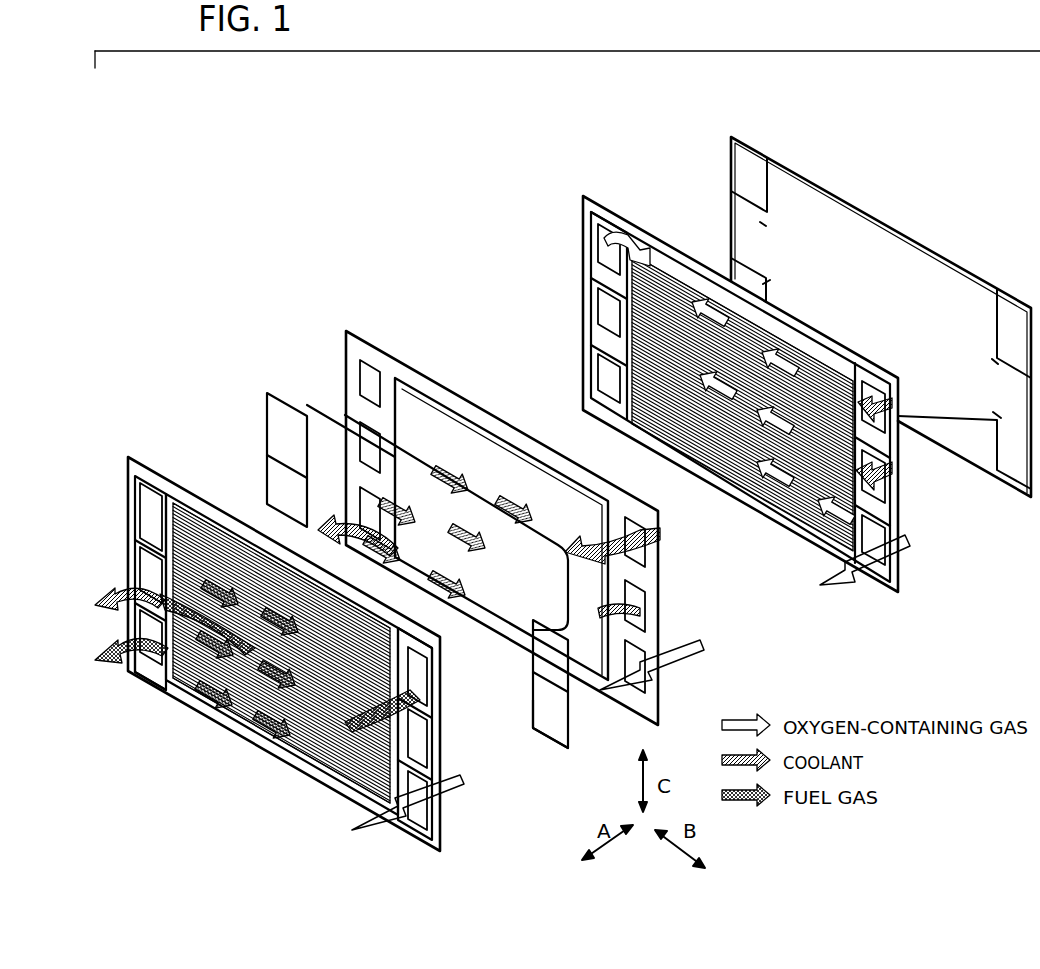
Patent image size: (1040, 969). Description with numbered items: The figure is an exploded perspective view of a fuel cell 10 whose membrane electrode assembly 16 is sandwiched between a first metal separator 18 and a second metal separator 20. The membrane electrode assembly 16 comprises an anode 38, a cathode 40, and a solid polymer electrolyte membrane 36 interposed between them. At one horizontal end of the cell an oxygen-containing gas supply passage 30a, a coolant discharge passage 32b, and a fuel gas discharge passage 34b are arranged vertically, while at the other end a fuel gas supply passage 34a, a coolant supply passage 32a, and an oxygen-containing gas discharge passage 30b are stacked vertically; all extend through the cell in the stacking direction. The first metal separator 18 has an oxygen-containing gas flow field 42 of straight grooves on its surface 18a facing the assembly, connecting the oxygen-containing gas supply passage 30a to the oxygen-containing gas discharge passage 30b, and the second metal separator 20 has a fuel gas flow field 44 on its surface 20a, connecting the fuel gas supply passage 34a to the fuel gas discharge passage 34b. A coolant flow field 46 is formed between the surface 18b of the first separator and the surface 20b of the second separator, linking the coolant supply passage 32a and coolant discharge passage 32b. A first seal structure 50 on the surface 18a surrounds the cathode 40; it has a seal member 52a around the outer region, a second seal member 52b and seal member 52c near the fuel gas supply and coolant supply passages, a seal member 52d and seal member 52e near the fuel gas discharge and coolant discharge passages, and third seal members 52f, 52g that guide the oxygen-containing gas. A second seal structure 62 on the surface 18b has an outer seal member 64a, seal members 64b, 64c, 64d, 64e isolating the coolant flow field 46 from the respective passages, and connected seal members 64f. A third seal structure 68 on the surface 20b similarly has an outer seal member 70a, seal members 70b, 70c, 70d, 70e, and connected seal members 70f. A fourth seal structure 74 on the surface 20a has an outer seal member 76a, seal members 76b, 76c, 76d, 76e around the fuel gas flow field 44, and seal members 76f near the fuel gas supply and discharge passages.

The fuel cell 10 is at (452, 236).
The membrane electrode assembly 16 is at (346, 331).
The first metal separator 18 is at (583, 196).
The surface of the first metal separator 18a is at (724, 475).
The surface of the first metal separator 18b is at (772, 495).
The second metal separator 20 is at (128, 457).
The surface of the second metal separator 20a is at (328, 772).
The surface of the second metal separator 20b is at (290, 758).
The oxygen-containing gas supply passage 30a is at (150, 530).
The oxygen-containing gas discharge passage 30b is at (428, 812).
The coolant supply passage 32a is at (430, 745).
The coolant discharge passage 32b is at (150, 580).
The fuel gas supply passage 34a is at (428, 680).
The fuel gas discharge passage 34b is at (150, 640).
The solid polymer electrolyte membrane 36 is at (630, 700).
The anode 38 is at (442, 402).
The cathode 40 is at (543, 470).
The oxygen-containing gas flow field 42 is at (815, 355).
The fuel gas flow field 44 is at (360, 625).
The coolant flow field 46 is at (192, 512).
The first seal structure 50 is at (685, 262).
The first seal member 52a is at (638, 412).
The second seal member 52b is at (870, 392).
The seal member 52c is at (888, 482).
The seal member 52d is at (605, 378).
The seal member 52e is at (605, 322).
The third seal member 52f is at (612, 235).
The third seal member 52g is at (832, 548).
The second seal structure 62 is at (731, 137).
The seal member 64a is at (905, 240).
The seal member 64b is at (769, 206).
The seal member 64c is at (995, 440).
The seal member 64d is at (995, 324).
The seal member 64e is at (764, 275).
The seal members 64f is at (770, 226).
The third seal structure 68 is at (190, 703).
The seal member 70a is at (222, 715).
The seal member 70b is at (140, 500).
The seal member 70c is at (432, 800).
The seal member 70d is at (410, 660).
The seal member 70e is at (142, 666).
The seal members 70f is at (190, 600).
The fourth seal structure 74 is at (268, 393).
The seal member 76a is at (418, 482).
The seal member 76b is at (275, 426).
The seal member 76c is at (560, 745).
The seal member 76d is at (533, 650).
The seal member 76e is at (268, 483).
The seal members 76f is at (545, 556).